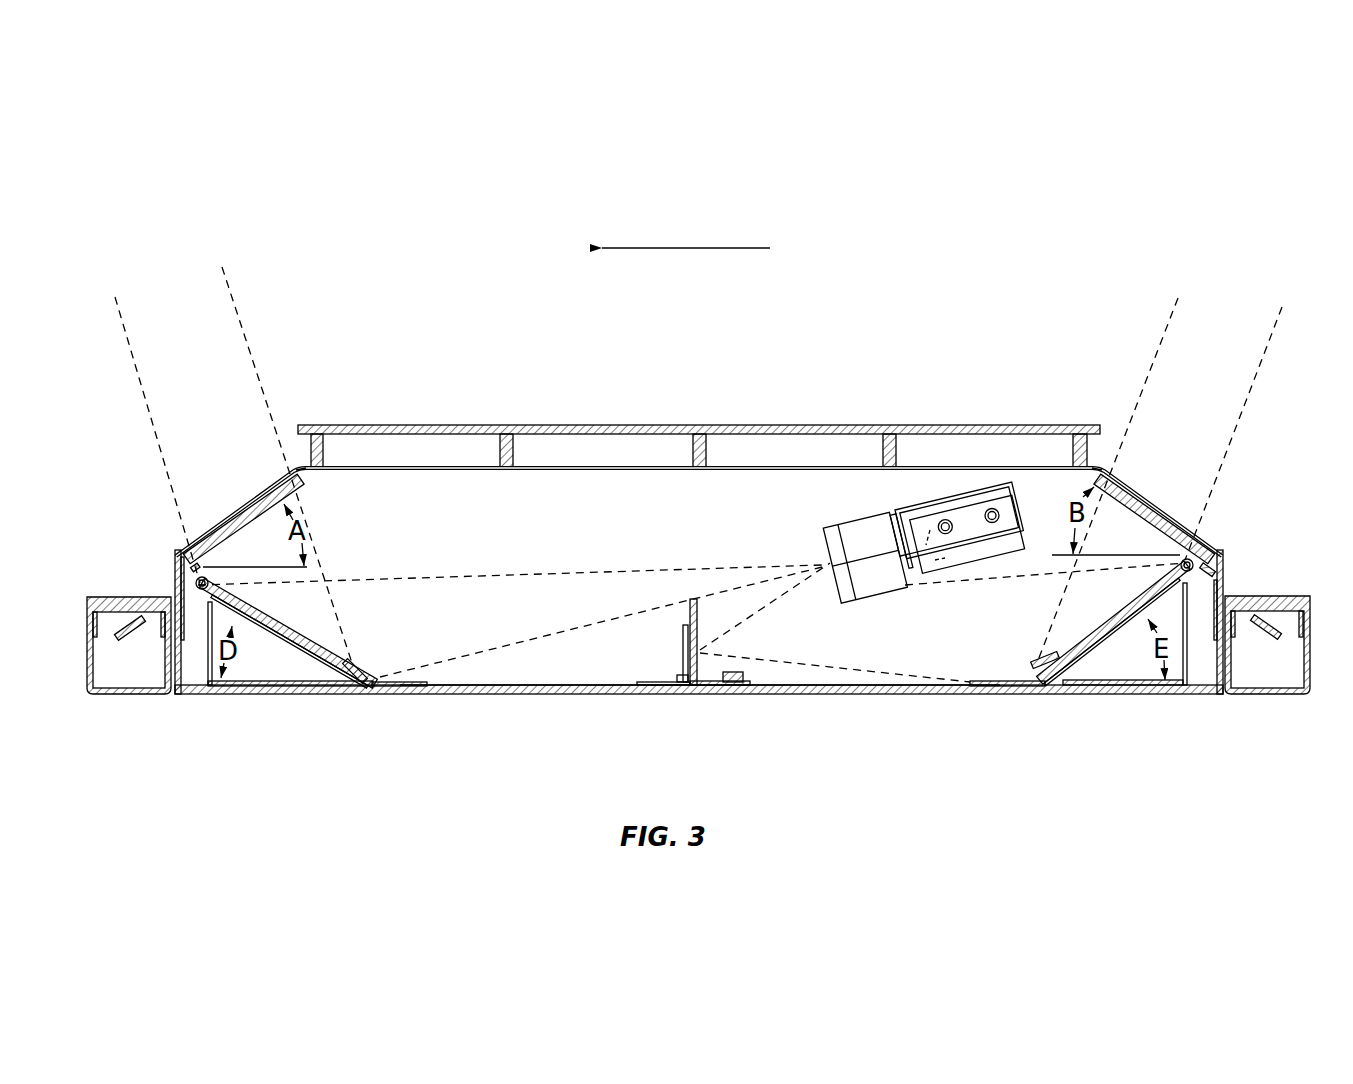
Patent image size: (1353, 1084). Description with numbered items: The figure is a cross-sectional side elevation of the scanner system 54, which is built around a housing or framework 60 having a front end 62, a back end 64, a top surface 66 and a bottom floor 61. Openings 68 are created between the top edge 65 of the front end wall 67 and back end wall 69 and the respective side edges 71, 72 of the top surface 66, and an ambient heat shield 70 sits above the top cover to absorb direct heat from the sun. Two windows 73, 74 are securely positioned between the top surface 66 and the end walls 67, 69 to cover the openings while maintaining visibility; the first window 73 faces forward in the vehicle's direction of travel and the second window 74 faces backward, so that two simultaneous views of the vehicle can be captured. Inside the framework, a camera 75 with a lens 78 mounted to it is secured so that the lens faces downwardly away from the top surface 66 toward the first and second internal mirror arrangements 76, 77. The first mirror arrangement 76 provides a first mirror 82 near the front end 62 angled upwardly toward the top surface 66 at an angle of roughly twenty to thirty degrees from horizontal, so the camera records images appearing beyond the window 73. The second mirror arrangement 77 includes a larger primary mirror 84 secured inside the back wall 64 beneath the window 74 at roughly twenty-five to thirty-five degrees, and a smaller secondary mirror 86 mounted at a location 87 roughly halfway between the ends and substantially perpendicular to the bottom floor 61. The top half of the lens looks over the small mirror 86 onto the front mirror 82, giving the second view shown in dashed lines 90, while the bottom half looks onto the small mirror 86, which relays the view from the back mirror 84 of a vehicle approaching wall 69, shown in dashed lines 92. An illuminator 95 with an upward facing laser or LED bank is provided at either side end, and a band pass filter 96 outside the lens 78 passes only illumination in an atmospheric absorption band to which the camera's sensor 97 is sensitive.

The scanner system 54 is at (568, 205).
The housing or framework 60 is at (568, 692).
The framework bottom floor 61 is at (523, 683).
The front end 62 is at (213, 708).
The back end 64 is at (1200, 710).
The top edge 65 is at (172, 555).
The top surface 66 is at (655, 470).
The front end wall 67 is at (177, 590).
The openings 68 is at (223, 428).
The back end wall 69 is at (1227, 580).
The ambient heat shield 70 is at (785, 425).
The side edge of top surface 71 is at (295, 456).
The side edge of top surface 72 is at (1090, 467).
The first window 73 is at (238, 510).
The second window 74 is at (1147, 500).
The camera 75 is at (960, 515).
The first internal mirror arrangement 76 is at (342, 573).
The second internal mirror arrangement 77 is at (1057, 657).
The lens 78 is at (883, 496).
The first mirror 82 is at (310, 652).
The primary mirror 84 is at (1090, 655).
The secondary mirror 86 is at (690, 613).
The location 87 is at (686, 710).
The dashed lines 90 is at (517, 583).
The dashed lines 92 is at (984, 583).
The illuminator 95 is at (130, 640).
The band pass filter 96 is at (833, 543).
The sensor 97 is at (925, 500).